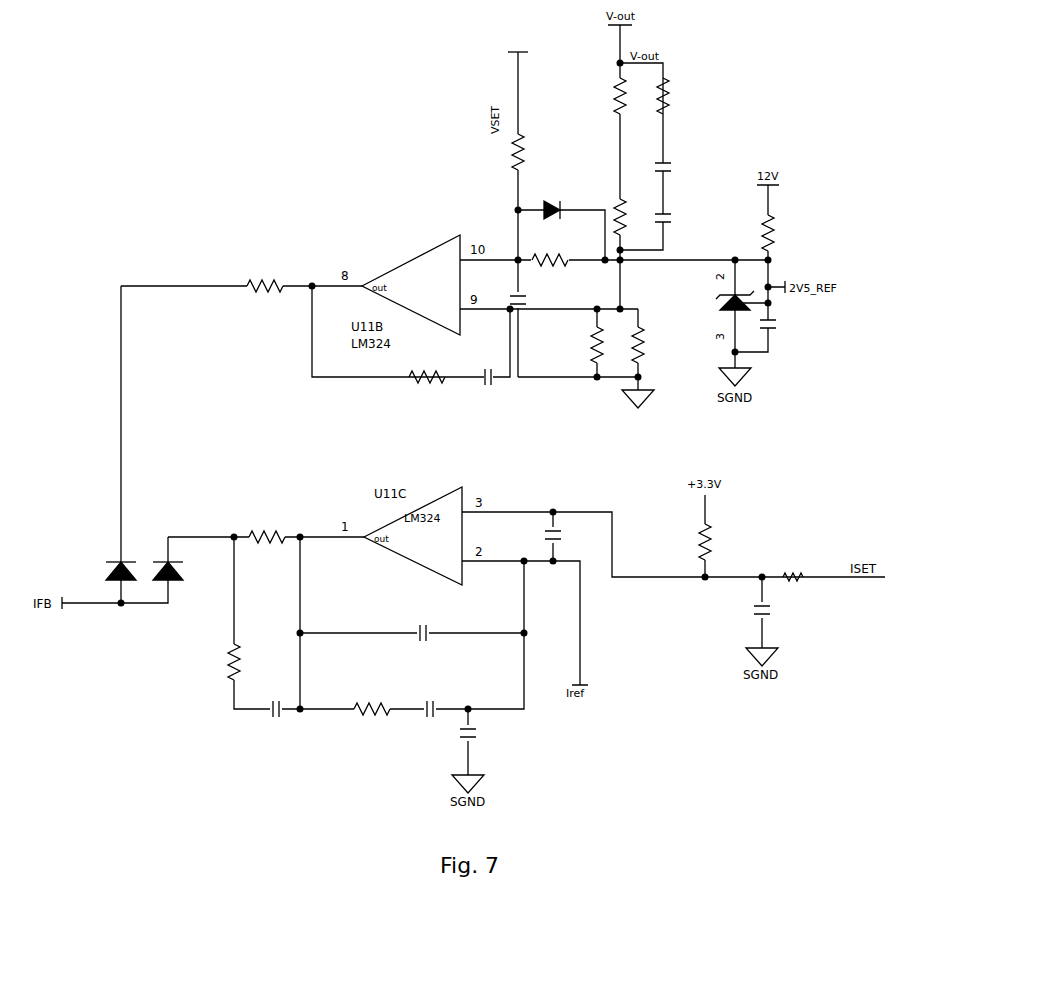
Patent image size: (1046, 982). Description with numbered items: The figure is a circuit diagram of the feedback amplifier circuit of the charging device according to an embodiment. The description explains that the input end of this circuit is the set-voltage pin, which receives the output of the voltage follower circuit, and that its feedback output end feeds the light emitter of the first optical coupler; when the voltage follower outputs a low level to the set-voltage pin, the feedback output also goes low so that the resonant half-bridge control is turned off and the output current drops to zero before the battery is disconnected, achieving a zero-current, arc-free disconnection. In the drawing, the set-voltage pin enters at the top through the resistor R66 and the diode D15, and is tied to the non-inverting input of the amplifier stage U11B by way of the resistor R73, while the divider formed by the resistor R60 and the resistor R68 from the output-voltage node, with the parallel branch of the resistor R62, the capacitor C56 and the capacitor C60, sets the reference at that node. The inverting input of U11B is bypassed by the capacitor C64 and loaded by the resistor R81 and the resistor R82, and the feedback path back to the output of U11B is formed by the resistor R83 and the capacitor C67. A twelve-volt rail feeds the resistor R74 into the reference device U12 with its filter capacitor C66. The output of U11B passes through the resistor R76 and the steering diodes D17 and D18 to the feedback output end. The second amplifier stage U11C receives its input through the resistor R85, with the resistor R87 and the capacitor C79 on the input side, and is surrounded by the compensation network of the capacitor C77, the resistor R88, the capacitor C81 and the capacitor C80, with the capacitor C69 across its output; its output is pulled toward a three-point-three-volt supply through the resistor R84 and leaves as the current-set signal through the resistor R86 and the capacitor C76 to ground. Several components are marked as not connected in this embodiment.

The operational amplifier LM324 (section B) U11B is at (411, 285).
The operational amplifier LM324 (section C) U11C is at (413, 536).
The zener/reference diode U12 is at (730, 307).
The resistor 33k 0603 R60 is at (594, 80).
The resistor 100R 0603 R62 is at (701, 96).
The resistor 3.9K R66 is at (533, 146).
The resistor 36K 0603 R68 is at (625, 204).
The resistor 15K 0603 R73 is at (556, 245).
The resistor 2.2K 0805 R74 is at (798, 238).
The resistor 3k 0805 R76 is at (266, 287).
The resistor NC R81 is at (579, 345).
The resistor 2.7K 0603 R82 is at (652, 351).
The resistor 10K 0603 R83 is at (392, 377).
The resistor 100K 0603 NC R84 is at (683, 545).
The resistor 3.6k 0805 R85 is at (273, 554).
The resistor 3.3K 0603 R86 is at (805, 578).
The resistor NC R87 is at (220, 662).
The resistor 2.4K R88 is at (369, 695).
The capacitor 2.2NF/100V C56 is at (702, 174).
The capacitor 2.2NF/100V C60 is at (702, 225).
The capacitor 105 0603 C64 is at (544, 310).
The capacitor 100NF/25V C66 is at (802, 325).
The capacitor 3.3nF/50V C67 is at (486, 375).
The capacitor NC C69 is at (569, 536).
The capacitor 105 0603 C76 is at (789, 625).
The capacitor NC C77 is at (407, 636).
The capacitor NC C79 is at (277, 709).
The capacitor NC C80 is at (482, 730).
The capacitor 15nF/50V C81 is at (417, 728).
The diode 1N4148 D15 is at (547, 200).
The diode 1N4148 D17 is at (139, 548).
The diode 1N4148 D18 is at (177, 590).